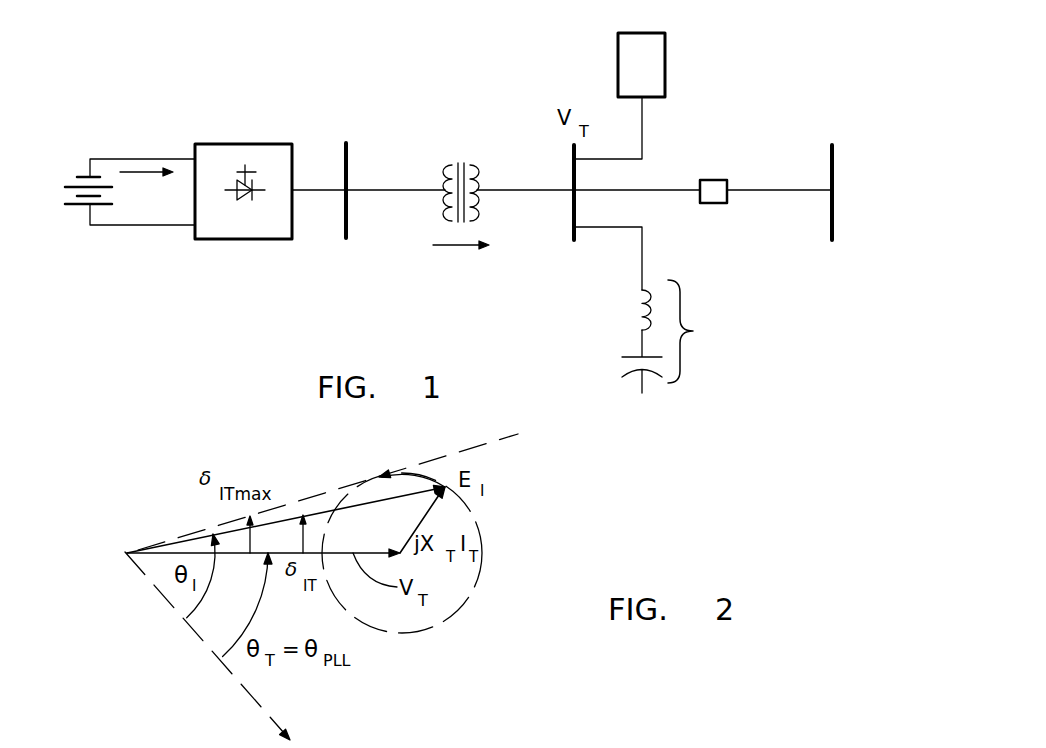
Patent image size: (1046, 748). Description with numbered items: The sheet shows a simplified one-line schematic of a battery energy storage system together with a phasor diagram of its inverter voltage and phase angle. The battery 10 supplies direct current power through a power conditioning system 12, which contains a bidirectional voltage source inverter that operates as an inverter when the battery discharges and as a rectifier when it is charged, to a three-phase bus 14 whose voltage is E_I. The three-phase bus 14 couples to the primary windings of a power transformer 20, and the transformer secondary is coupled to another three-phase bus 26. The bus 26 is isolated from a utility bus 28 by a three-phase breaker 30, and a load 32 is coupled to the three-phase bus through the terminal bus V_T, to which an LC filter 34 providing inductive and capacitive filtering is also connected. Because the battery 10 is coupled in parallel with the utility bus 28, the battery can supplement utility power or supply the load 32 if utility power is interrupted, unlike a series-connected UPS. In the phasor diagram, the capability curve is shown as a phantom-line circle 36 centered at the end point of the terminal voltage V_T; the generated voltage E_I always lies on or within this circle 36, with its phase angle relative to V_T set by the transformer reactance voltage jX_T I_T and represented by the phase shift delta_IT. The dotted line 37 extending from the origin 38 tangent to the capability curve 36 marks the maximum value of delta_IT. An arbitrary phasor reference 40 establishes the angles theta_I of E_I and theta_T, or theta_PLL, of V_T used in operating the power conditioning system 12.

In FIG. 1, the battery 10 is at (64, 197).
In FIG. 1, the power conditioning system 12 is at (260, 229).
In FIG. 1, the three-phase bus 14 is at (402, 190).
In FIG. 1, the power transformer 20 is at (473, 225).
In FIG. 1, the three-phase bus 26 is at (640, 192).
In FIG. 1, the utility bus 28 is at (832, 218).
In FIG. 1, the three-phase breaker 30 is at (720, 203).
In FIG. 1, the load 32 is at (658, 76).
In FIG. 1, the LC filter 34 is at (678, 310).
In FIG. 2, the capability curve 36 is at (470, 600).
In FIG. 2, the dotted line 37 is at (322, 490).
In FIG. 2, the origin 38 is at (123, 553).
In FIG. 2, the phasor reference 40 is at (245, 689).